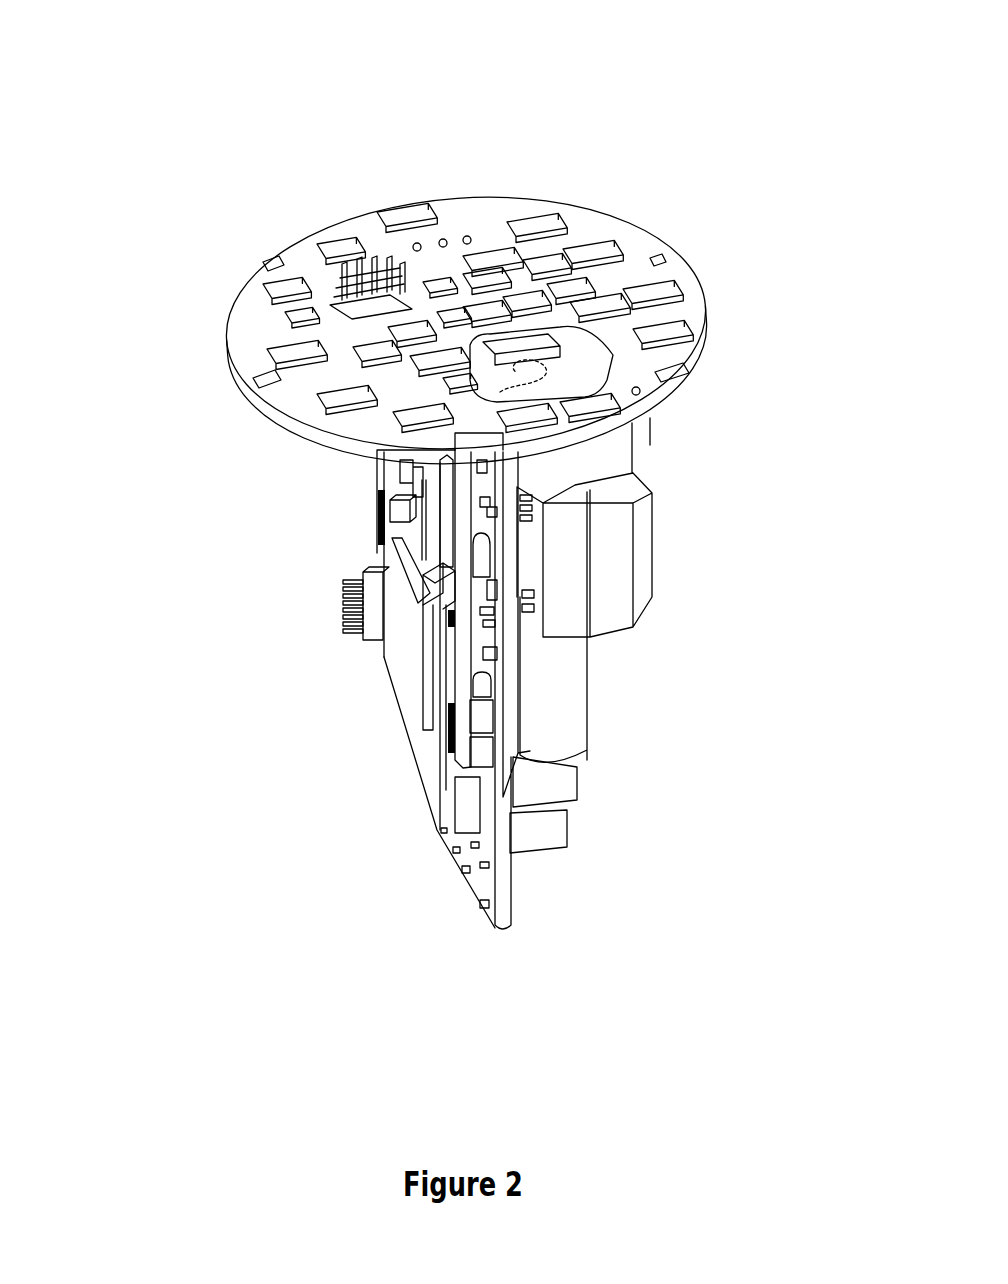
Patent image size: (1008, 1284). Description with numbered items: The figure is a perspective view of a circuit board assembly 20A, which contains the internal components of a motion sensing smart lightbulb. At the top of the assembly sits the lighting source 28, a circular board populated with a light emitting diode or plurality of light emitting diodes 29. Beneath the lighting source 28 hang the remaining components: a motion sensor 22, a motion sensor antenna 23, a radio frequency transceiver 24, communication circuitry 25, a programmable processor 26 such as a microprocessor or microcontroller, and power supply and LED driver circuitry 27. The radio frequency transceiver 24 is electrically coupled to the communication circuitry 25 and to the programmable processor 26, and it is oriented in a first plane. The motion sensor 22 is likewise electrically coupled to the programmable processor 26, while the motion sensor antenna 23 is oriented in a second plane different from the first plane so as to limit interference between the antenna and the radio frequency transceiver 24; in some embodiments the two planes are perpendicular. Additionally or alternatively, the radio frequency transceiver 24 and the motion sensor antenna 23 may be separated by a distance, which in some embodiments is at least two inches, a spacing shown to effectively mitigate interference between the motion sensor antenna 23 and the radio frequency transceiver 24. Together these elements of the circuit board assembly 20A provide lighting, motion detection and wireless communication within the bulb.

The circuit board assembly 20A is at (567, 194).
The motion sensor 22 is at (375, 540).
The motion sensor antenna 23 is at (660, 397).
The radio frequency transceiver 24 is at (417, 743).
The communication circuitry 25 is at (402, 638).
The programmable processor 26 is at (385, 468).
The power supply and LED driver circuitry 27 is at (513, 667).
The lighting source 28 is at (250, 343).
The light emitting diodes 29 is at (337, 250).